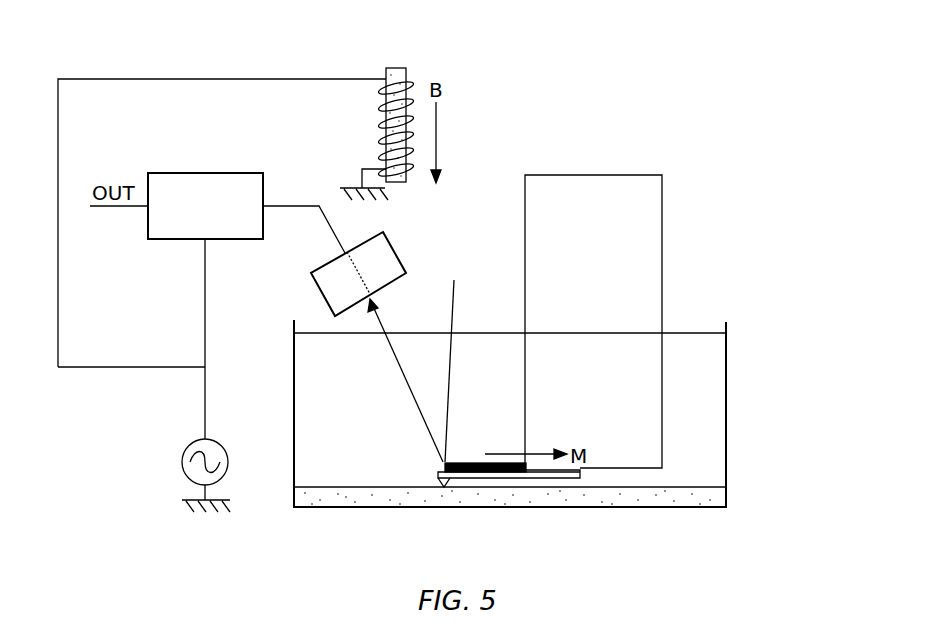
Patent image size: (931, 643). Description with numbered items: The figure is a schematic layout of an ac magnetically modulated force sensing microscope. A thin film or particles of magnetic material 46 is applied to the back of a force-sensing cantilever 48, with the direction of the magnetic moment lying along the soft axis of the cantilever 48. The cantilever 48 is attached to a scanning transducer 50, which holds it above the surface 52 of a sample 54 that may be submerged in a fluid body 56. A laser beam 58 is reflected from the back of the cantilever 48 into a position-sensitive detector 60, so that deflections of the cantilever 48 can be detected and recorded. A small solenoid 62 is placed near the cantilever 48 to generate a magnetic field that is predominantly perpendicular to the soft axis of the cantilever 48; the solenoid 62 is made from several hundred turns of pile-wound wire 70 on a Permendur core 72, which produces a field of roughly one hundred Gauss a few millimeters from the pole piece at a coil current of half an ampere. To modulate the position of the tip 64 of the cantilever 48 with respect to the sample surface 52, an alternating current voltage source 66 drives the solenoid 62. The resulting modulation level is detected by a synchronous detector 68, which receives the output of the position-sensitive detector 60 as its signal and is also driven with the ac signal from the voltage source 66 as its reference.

The magnetic material 46 is at (493, 473).
The force-sensing cantilever 48 is at (538, 473).
The scanning transducer 50 is at (662, 256).
The surface 52 is at (713, 487).
The sample 54 is at (718, 500).
The fluid body 56 is at (685, 413).
The laser beam 58 is at (380, 316).
The position-sensitive detector 60 is at (398, 254).
The solenoid 62 is at (366, 115).
The tip 64 is at (445, 478).
The alternating current voltage source 66 is at (182, 460).
The synchronous detector 68 is at (205, 173).
The pile-wound wire 70 is at (384, 111).
The Permendur core 72 is at (384, 141).